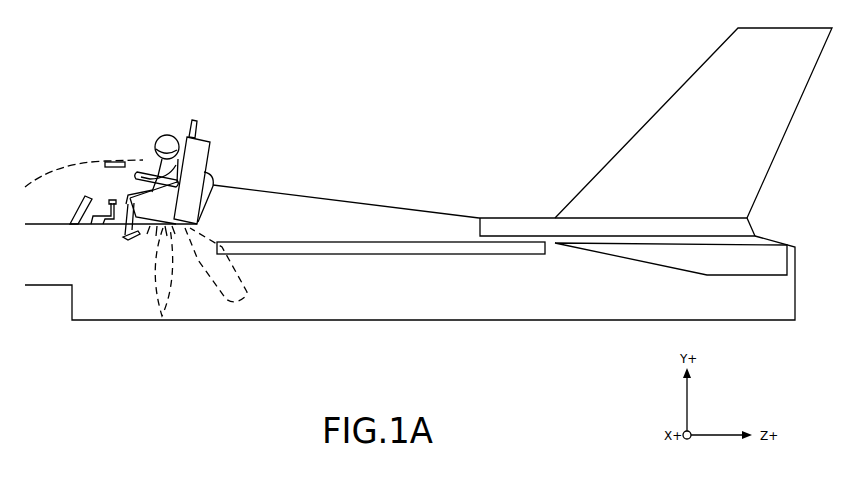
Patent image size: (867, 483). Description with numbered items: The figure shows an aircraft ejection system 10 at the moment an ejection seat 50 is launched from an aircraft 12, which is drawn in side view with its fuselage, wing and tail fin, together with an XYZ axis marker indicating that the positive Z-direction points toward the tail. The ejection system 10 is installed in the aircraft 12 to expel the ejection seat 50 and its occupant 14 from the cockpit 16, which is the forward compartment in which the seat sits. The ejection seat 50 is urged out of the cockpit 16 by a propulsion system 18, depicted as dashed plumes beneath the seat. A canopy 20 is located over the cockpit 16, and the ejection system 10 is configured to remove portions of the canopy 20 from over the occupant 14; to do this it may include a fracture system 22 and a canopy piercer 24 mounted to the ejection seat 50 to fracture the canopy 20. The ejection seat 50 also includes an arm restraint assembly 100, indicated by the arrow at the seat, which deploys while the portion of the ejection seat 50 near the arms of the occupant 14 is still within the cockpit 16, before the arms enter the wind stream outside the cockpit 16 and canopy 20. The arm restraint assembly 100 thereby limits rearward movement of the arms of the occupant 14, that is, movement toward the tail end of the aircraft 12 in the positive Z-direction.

The aircraft ejection system 10 is at (346, 100).
The aircraft 12 is at (439, 293).
The occupant 14 is at (157, 143).
The cockpit 16 is at (56, 206).
The propulsion system 18 is at (158, 272).
The canopy 20 is at (66, 163).
The fracture system 22 is at (110, 162).
The canopy piercer 24 is at (197, 121).
The ejection seat 50 is at (212, 145).
The arm restraint assembly 100 is at (203, 162).